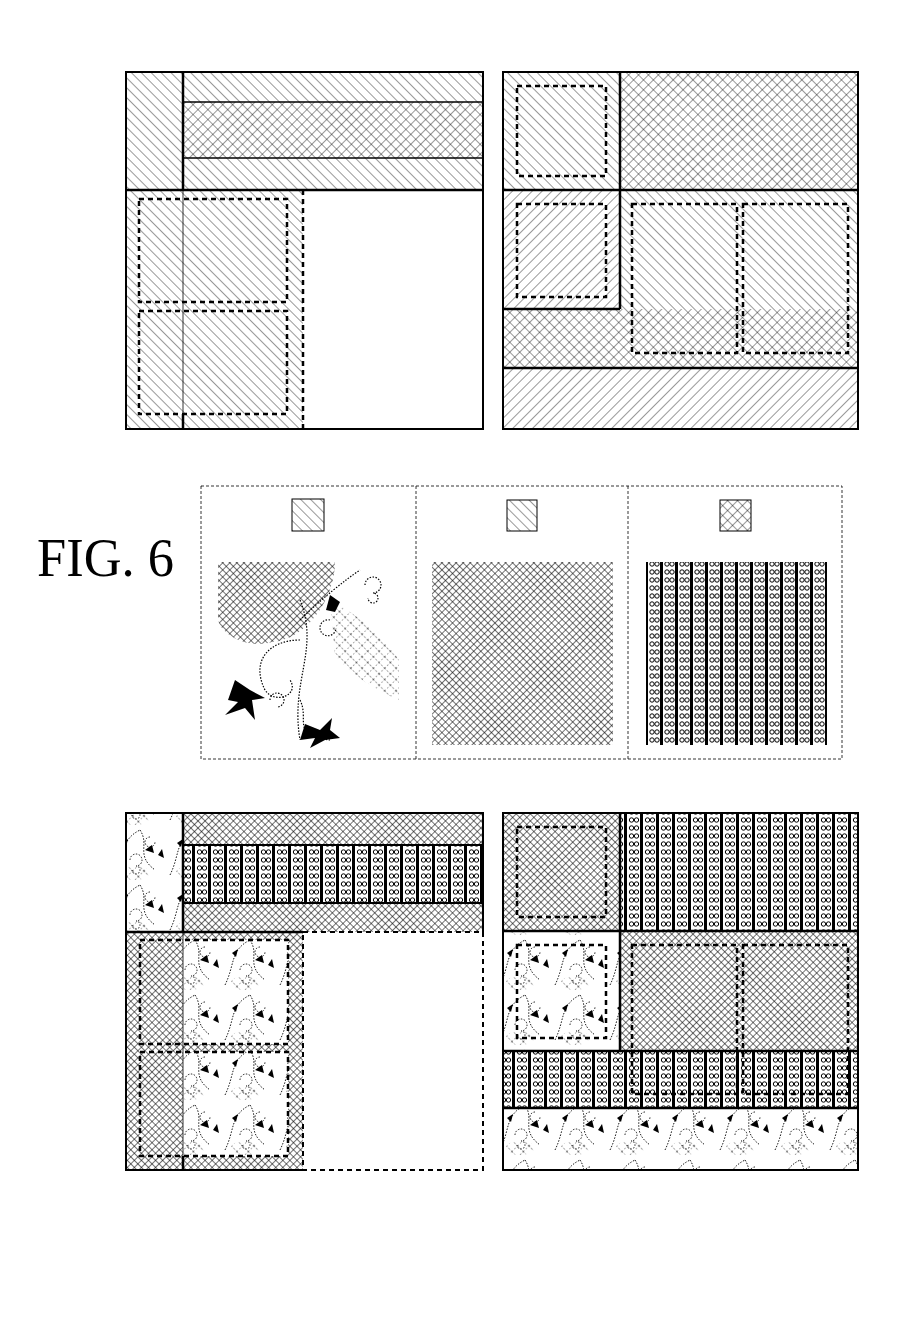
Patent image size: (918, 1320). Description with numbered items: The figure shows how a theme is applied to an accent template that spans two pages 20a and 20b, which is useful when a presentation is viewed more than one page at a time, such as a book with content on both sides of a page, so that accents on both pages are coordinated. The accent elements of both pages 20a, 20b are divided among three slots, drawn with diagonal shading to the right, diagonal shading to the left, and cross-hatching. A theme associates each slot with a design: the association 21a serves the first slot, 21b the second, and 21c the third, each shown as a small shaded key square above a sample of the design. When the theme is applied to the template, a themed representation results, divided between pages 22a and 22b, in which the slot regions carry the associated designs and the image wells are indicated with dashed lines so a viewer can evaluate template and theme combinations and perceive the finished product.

The first page of accent template 20a is at (192, 44).
The second page of accent template 20b is at (701, 44).
The first slot design association 21a is at (258, 514).
The second slot design association 21b is at (466, 531).
The third slot design association 21c is at (676, 531).
The first page of themed representation 22a is at (136, 776).
The second page of themed representation 22b is at (771, 789).